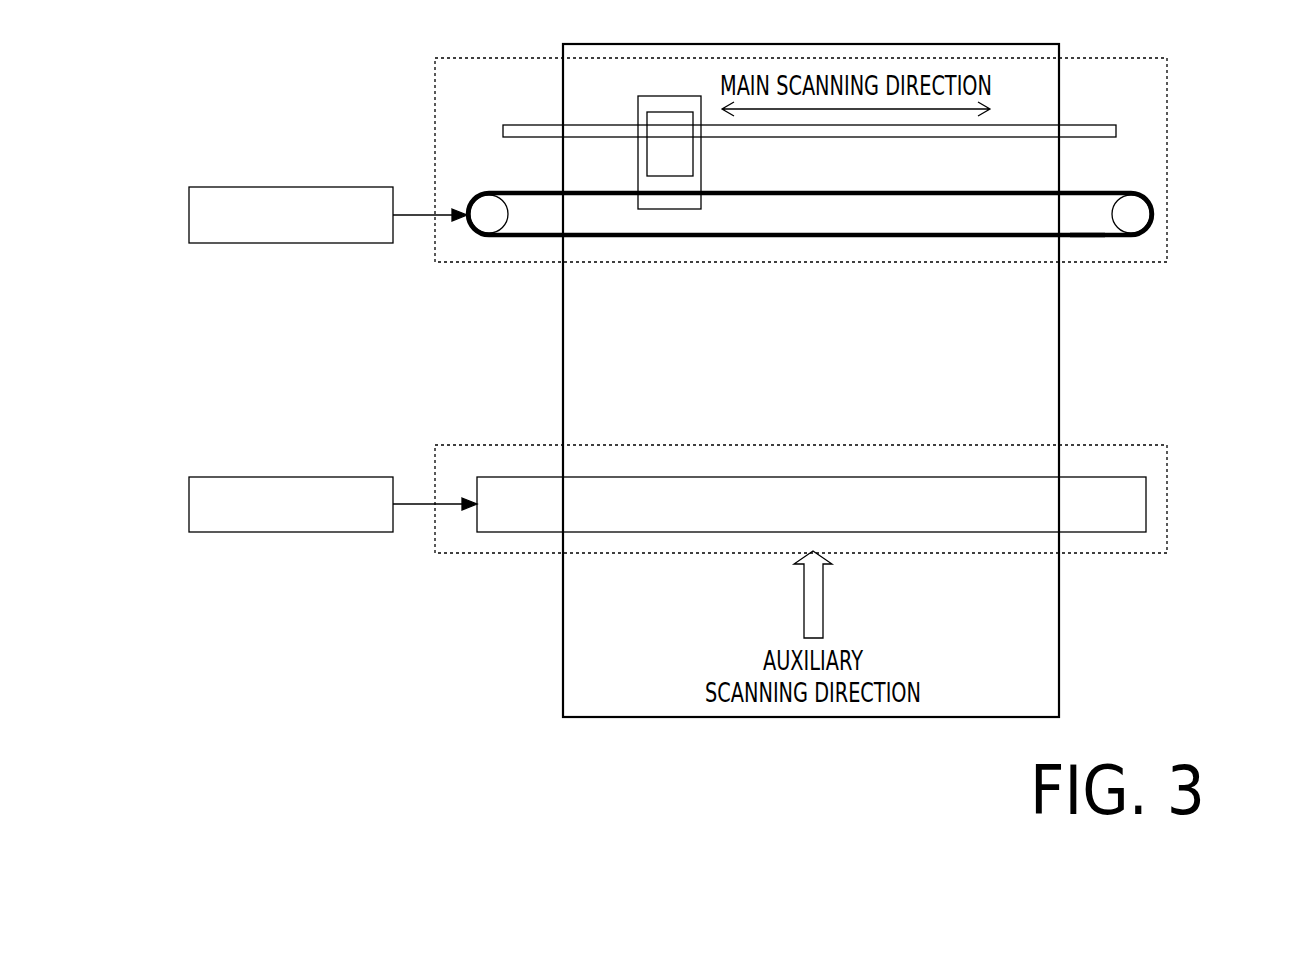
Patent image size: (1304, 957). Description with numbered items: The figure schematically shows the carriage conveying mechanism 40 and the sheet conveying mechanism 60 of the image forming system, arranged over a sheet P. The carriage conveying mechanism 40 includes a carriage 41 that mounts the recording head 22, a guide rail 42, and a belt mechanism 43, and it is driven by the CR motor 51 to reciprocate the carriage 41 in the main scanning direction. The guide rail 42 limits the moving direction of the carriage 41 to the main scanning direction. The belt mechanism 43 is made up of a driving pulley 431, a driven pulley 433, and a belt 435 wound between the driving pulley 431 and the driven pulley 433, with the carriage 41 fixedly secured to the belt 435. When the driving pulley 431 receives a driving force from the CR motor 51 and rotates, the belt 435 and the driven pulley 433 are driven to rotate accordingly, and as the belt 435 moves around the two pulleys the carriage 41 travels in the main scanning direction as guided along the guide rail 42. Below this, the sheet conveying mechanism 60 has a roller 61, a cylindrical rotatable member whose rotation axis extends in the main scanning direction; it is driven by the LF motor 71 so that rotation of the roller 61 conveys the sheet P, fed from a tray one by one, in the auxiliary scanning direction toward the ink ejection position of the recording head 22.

The carriage conveying mechanism 40 is at (1135, 58).
The carriage 41 is at (638, 158).
The guide rail 42 is at (627, 122).
The recording head 22 is at (680, 112).
The belt mechanism 43 is at (600, 240).
The driving pulley 431 is at (489, 223).
The driven pulley 433 is at (1140, 214).
The belt 435 is at (1087, 238).
The CR motor 51 is at (290, 186).
The LF motor 71 is at (290, 476).
The sheet conveying mechanism 60 is at (1135, 445).
The roller 61 is at (511, 476).
The sheet P is at (1059, 362).